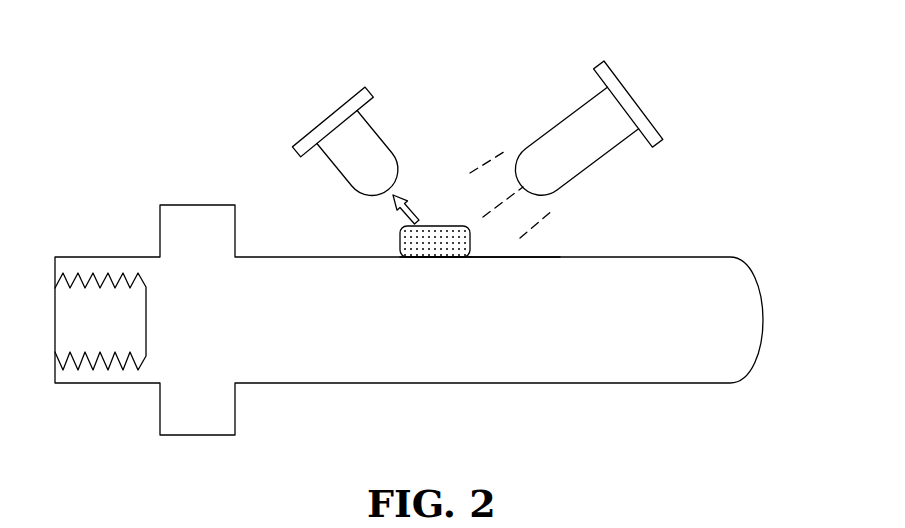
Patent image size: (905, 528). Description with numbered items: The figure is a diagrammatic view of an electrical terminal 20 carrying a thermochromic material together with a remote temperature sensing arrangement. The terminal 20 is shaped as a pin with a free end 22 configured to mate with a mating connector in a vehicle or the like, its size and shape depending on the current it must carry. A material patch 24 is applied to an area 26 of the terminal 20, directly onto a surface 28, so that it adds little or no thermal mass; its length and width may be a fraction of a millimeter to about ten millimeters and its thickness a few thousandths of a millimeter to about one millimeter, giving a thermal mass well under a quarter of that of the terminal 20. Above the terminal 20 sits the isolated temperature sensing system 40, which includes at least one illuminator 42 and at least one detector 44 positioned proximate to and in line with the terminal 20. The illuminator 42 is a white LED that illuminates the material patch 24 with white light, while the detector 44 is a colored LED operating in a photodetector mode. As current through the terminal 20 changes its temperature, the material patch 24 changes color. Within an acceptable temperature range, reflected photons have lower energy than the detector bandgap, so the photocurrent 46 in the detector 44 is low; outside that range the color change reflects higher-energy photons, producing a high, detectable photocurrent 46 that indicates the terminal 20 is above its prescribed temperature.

The terminal 20 is at (555, 410).
The free end 22 is at (737, 293).
The material patch 24 is at (398, 253).
The area 26 is at (440, 263).
The surface 28 is at (482, 257).
The isolated temperature sensing system 40 is at (500, 67).
The illuminator 42 is at (602, 160).
The detector 44 is at (370, 118).
The photocurrent 46 is at (405, 193).